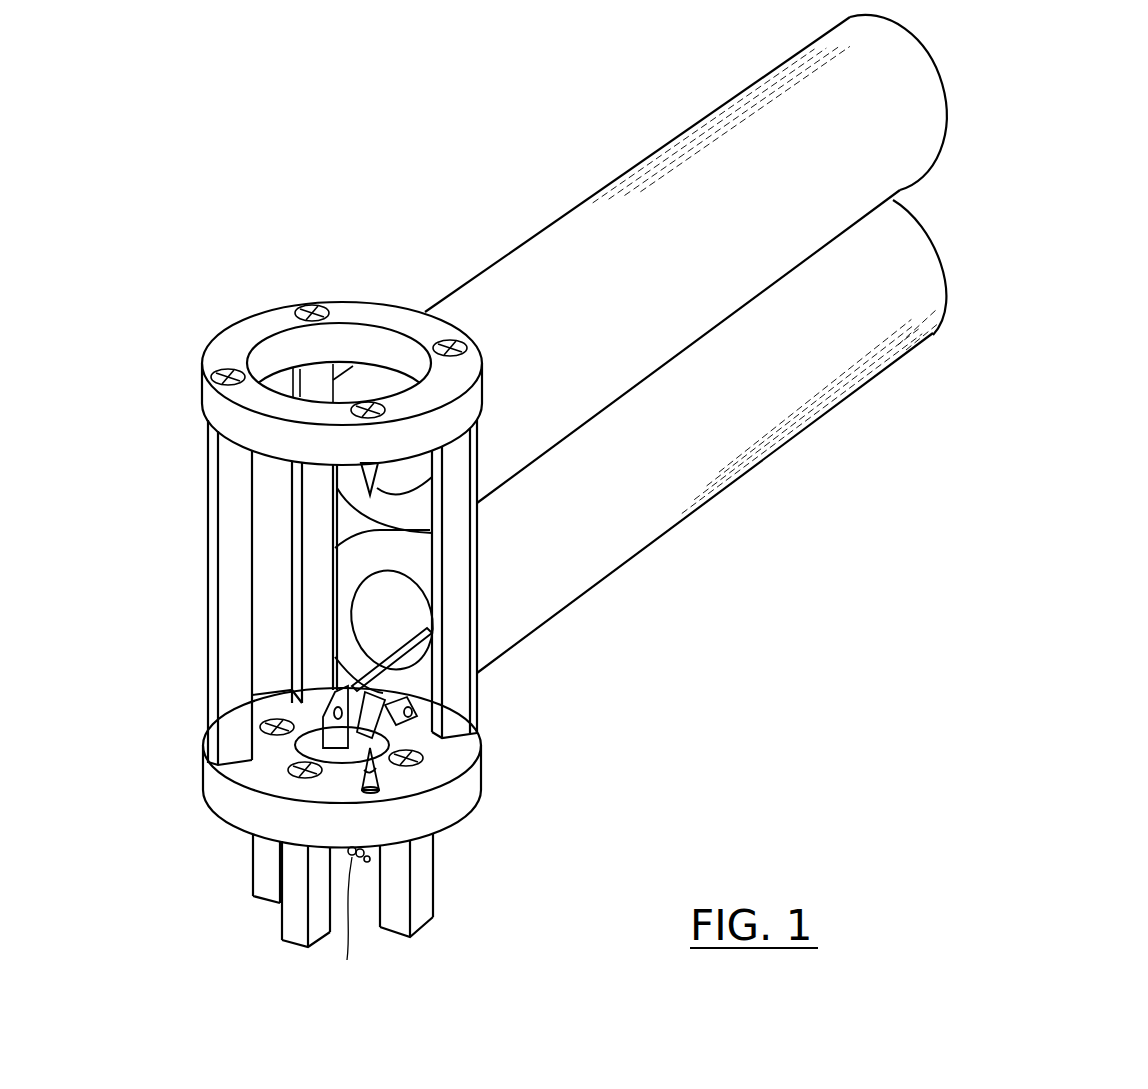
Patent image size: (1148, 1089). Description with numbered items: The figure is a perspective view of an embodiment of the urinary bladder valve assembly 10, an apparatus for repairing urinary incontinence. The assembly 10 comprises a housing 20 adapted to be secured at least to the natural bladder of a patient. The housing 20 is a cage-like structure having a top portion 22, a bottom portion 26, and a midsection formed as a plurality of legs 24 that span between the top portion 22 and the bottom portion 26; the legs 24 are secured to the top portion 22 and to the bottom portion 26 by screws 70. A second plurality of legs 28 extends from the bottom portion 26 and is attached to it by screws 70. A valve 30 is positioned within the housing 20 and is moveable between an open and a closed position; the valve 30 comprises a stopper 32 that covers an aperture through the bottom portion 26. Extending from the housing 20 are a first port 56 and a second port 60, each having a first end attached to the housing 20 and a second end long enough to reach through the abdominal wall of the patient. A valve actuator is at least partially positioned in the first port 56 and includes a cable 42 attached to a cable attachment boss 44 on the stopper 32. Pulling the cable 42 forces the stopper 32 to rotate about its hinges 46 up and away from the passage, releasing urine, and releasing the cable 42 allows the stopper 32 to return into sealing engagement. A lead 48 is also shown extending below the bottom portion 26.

The urinary bladder valve assembly 10 is at (385, 180).
The housing 20 is at (188, 508).
The top portion 22 is at (257, 327).
The legs 24 is at (208, 586).
The bottom portion 26 is at (453, 797).
The second plurality of legs 28 is at (252, 865).
The valve 30 is at (192, 821).
The stopper 32 is at (303, 737).
The cable 42 is at (400, 648).
The cable attachment boss 44 is at (325, 720).
The hinges 46 is at (372, 675).
The lead wire 48 is at (353, 931).
The first port 56 is at (837, 407).
The second port 60 is at (633, 157).
The screws 70 is at (215, 368).